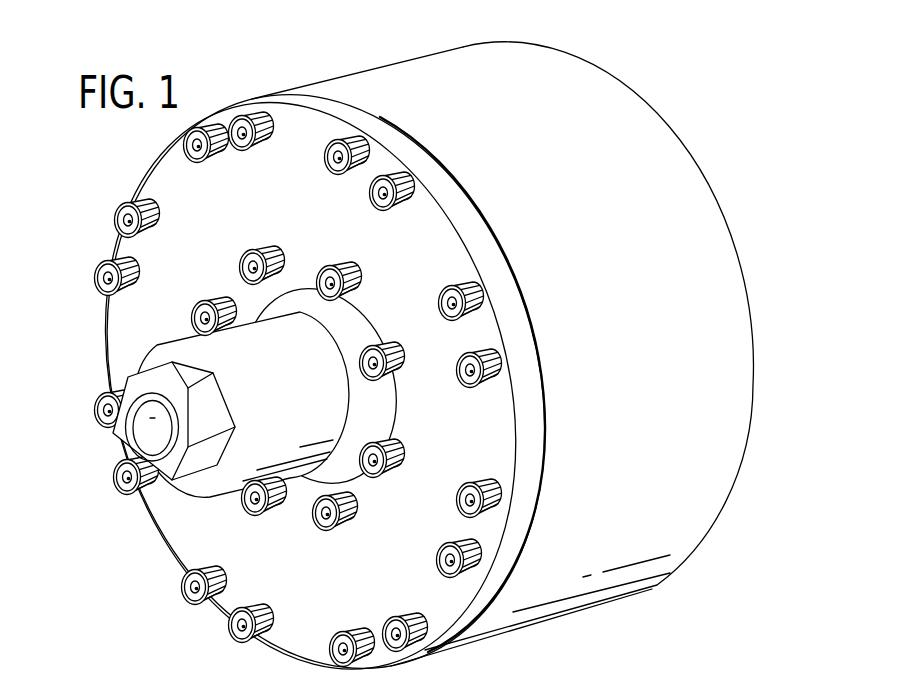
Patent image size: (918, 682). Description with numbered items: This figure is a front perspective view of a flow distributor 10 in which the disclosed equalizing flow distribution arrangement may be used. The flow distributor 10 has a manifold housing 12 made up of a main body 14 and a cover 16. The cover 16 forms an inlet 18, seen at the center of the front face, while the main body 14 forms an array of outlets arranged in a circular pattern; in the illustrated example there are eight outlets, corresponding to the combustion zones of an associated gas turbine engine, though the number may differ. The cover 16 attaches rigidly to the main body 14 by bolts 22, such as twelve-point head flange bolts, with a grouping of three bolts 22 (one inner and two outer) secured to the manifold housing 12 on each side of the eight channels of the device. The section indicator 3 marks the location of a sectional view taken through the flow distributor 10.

The flow distributor 10 is at (630, 44).
The manifold housing 12 is at (675, 126).
The main body 14 is at (384, 80).
The cover 16 is at (303, 130).
The inlet 18 is at (157, 438).
The bolts 22 is at (458, 503).
The section line for FIG. 3 is at (768, 248).